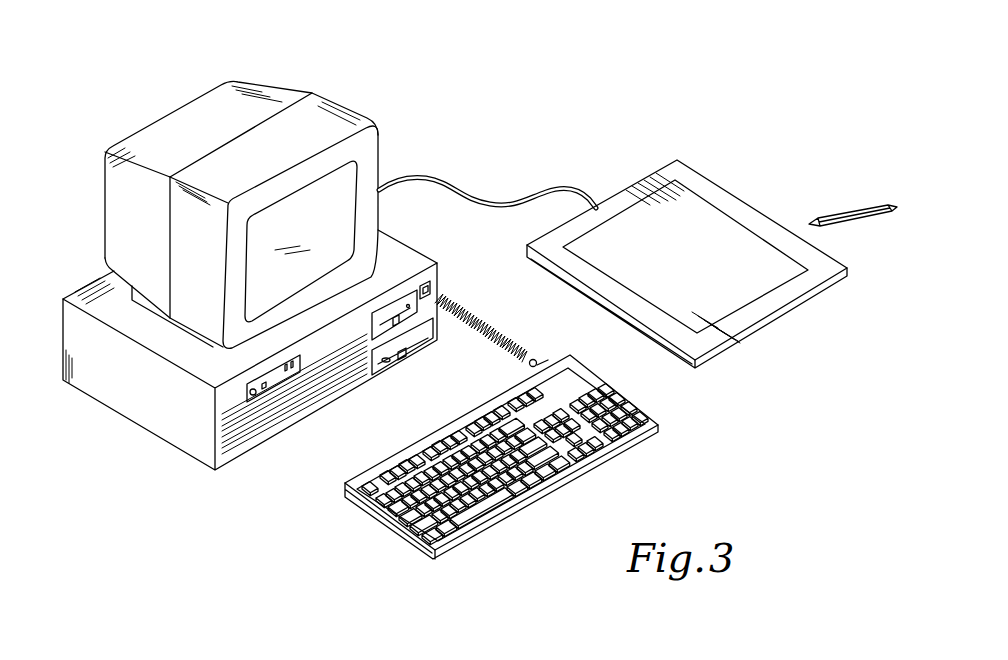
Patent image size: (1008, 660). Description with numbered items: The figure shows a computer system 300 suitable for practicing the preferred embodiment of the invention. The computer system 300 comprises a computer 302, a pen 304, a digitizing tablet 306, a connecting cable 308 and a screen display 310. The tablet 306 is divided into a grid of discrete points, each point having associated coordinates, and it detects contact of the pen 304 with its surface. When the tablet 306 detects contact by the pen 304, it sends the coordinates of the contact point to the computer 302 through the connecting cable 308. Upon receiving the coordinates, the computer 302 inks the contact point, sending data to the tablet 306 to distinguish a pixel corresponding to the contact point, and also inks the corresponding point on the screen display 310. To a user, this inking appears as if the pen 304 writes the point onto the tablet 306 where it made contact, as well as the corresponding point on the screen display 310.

The computer system 300 is at (131, 94).
The computer 302 is at (132, 396).
The pen 304 is at (843, 207).
The digitizing tablet 306 is at (708, 178).
The connecting cable 308 is at (457, 187).
The screen display 310 is at (380, 178).